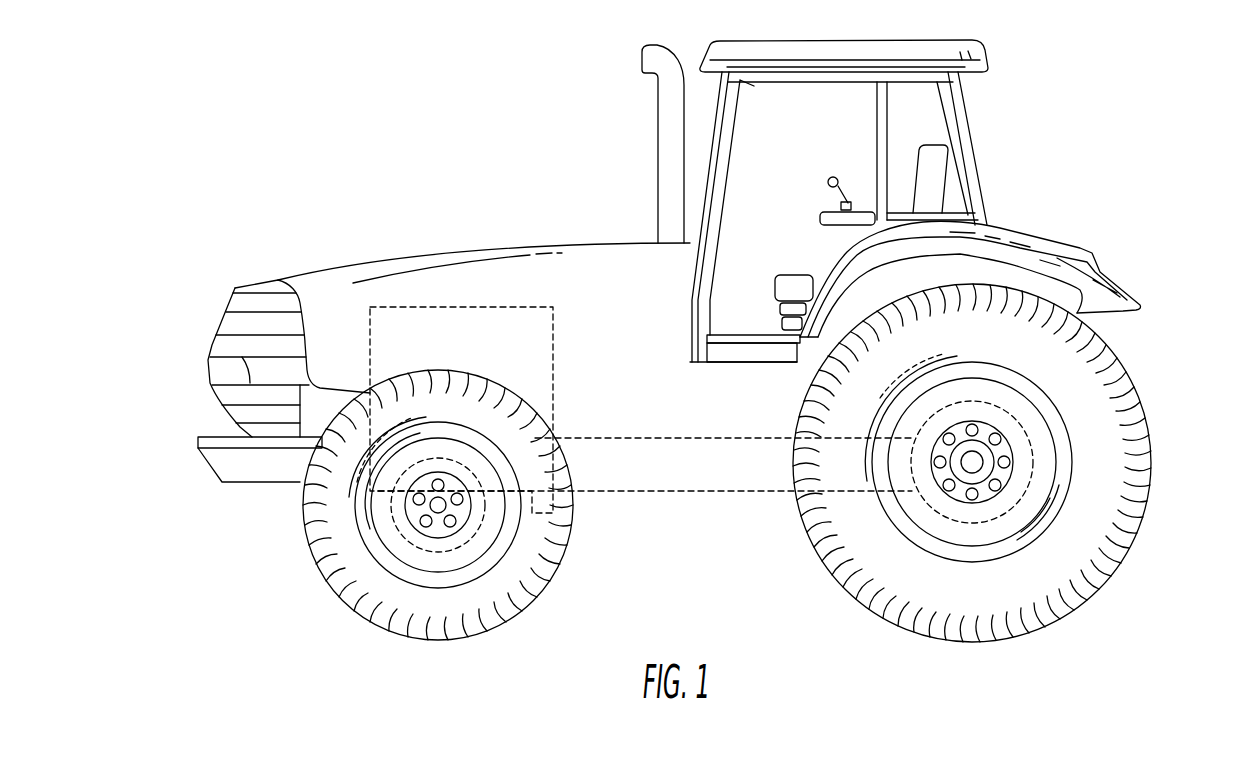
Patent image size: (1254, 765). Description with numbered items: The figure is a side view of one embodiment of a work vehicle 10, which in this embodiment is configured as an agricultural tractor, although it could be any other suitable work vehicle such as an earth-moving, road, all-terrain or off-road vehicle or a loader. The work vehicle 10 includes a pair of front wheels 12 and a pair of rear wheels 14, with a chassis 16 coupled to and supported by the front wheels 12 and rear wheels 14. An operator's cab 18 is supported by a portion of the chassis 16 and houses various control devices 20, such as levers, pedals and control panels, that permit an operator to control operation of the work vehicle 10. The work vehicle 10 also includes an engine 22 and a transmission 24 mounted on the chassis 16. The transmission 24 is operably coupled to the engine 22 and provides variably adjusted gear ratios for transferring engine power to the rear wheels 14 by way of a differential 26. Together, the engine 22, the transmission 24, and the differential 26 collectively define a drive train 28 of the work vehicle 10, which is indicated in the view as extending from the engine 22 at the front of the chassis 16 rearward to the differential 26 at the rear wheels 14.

The work vehicle 10 is at (352, 153).
The front wheels 12 is at (303, 523).
The rear wheels 14 is at (1145, 498).
The chassis 16 is at (638, 492).
The operator's cab 18 is at (978, 157).
The control devices 20 is at (829, 178).
The engine 22 is at (432, 307).
The transmission 24 is at (666, 438).
The differential 26 is at (1037, 453).
The drive train 28 is at (596, 262).